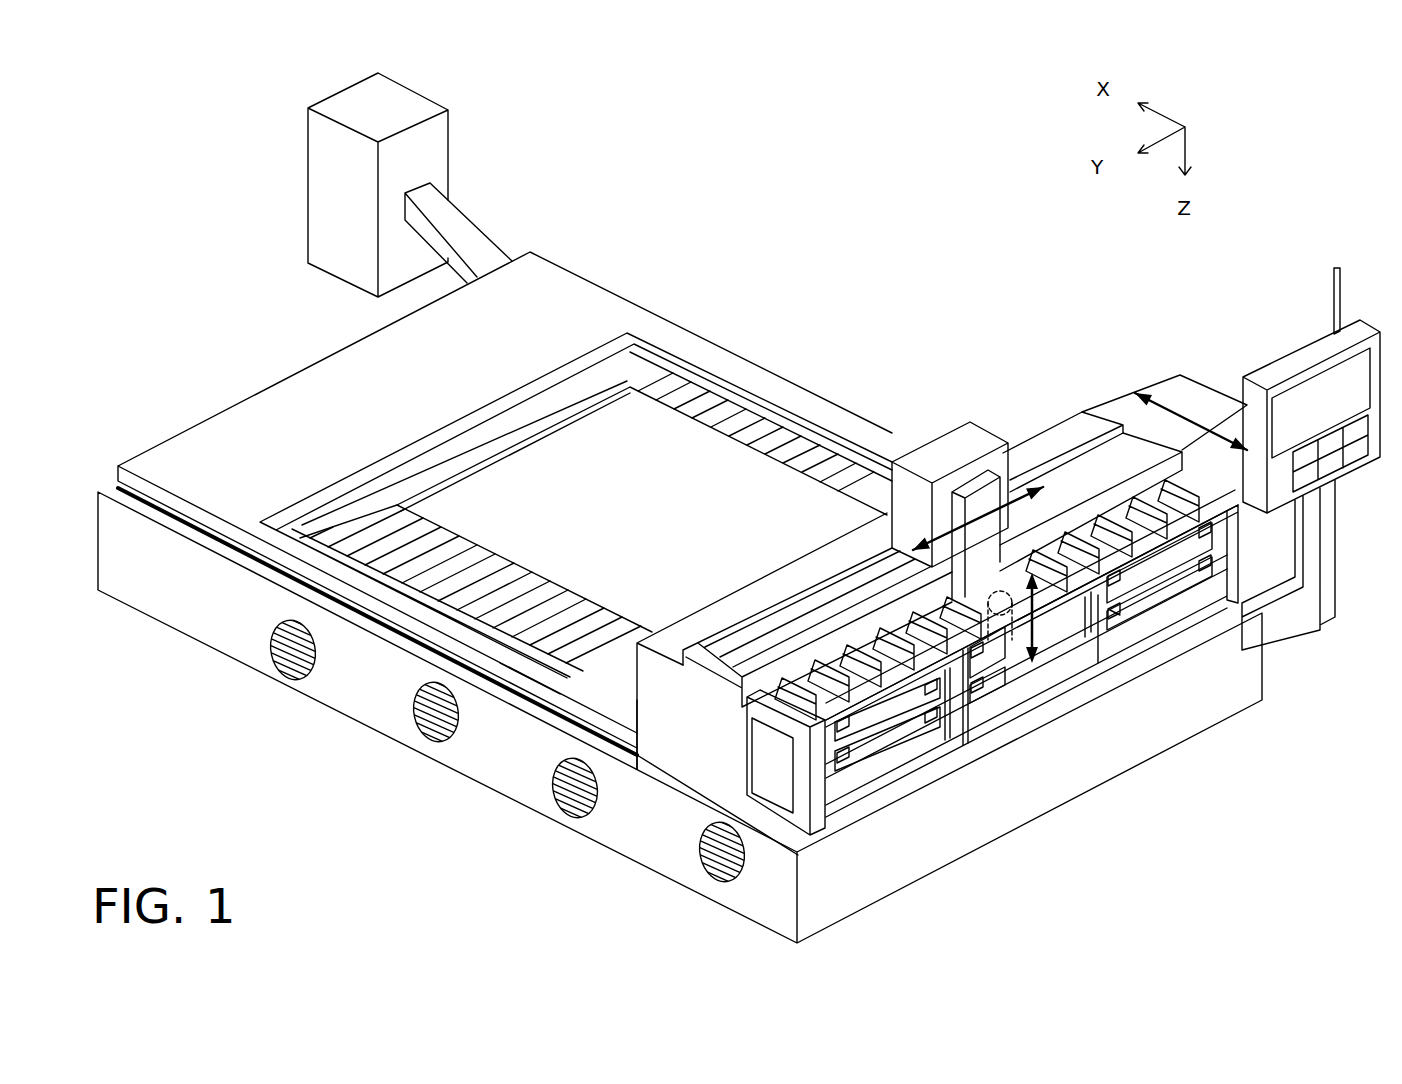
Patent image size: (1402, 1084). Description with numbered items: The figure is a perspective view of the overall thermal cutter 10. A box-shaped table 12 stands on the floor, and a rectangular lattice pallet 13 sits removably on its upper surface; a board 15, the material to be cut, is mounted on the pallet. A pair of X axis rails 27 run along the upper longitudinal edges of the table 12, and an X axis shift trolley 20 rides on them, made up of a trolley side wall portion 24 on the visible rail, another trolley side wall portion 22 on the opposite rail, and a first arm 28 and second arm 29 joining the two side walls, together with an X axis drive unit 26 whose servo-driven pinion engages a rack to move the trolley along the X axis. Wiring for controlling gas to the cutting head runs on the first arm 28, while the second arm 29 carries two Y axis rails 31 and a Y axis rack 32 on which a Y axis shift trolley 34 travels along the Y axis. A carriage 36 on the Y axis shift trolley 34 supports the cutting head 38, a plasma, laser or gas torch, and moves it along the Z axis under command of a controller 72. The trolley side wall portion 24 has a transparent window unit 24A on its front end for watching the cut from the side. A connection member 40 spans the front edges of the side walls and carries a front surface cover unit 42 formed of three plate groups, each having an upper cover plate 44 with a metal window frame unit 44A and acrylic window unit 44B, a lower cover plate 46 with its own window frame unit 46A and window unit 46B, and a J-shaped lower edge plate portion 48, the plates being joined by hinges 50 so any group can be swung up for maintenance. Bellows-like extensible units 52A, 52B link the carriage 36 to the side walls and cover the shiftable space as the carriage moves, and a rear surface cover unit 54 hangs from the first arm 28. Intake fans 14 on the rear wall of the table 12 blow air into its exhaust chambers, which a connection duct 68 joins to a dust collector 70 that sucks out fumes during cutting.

The thermal cutter 10 is at (879, 184).
The table 12 is at (621, 313).
The lattice pallet 13 is at (690, 386).
The intake fans 14 is at (280, 722).
The board 15 is at (716, 456).
The X axis shift trolley 20 is at (1057, 292).
The trolley side wall portion 22 is at (1232, 578).
The trolley side wall portion 24 is at (647, 686).
The window unit 24A is at (787, 773).
The X axis drive unit 26 is at (1213, 403).
The X axis rails 27 is at (543, 706).
The first arm 28 is at (637, 682).
The second arm 29 is at (733, 681).
The Y axis rails 31 is at (1103, 443).
The Y axis rack 32 is at (1137, 437).
The Y axis shift trolley 34 is at (951, 445).
The carriage 36 is at (982, 512).
The cutting head 38 is at (943, 737).
The connection member 40 is at (1150, 556).
The front surface cover unit 42 is at (885, 823).
The upper cover plate 44 is at (1028, 753).
The window frame unit 44A is at (897, 700).
The window unit 44B is at (905, 722).
The lower cover plate 46 is at (1071, 779).
The window frame unit 46A is at (985, 680).
The window unit 46B is at (985, 712).
The lower edge plate portion 48 is at (952, 710).
The hinges 50 is at (843, 725).
The extensible unit 52A is at (1026, 605).
The extensible unit 52B is at (1115, 615).
The rear surface cover unit 54 is at (1052, 407).
The connection duct 68 is at (462, 232).
The dust collector 70 is at (432, 165).
The controller 72 is at (1313, 347).